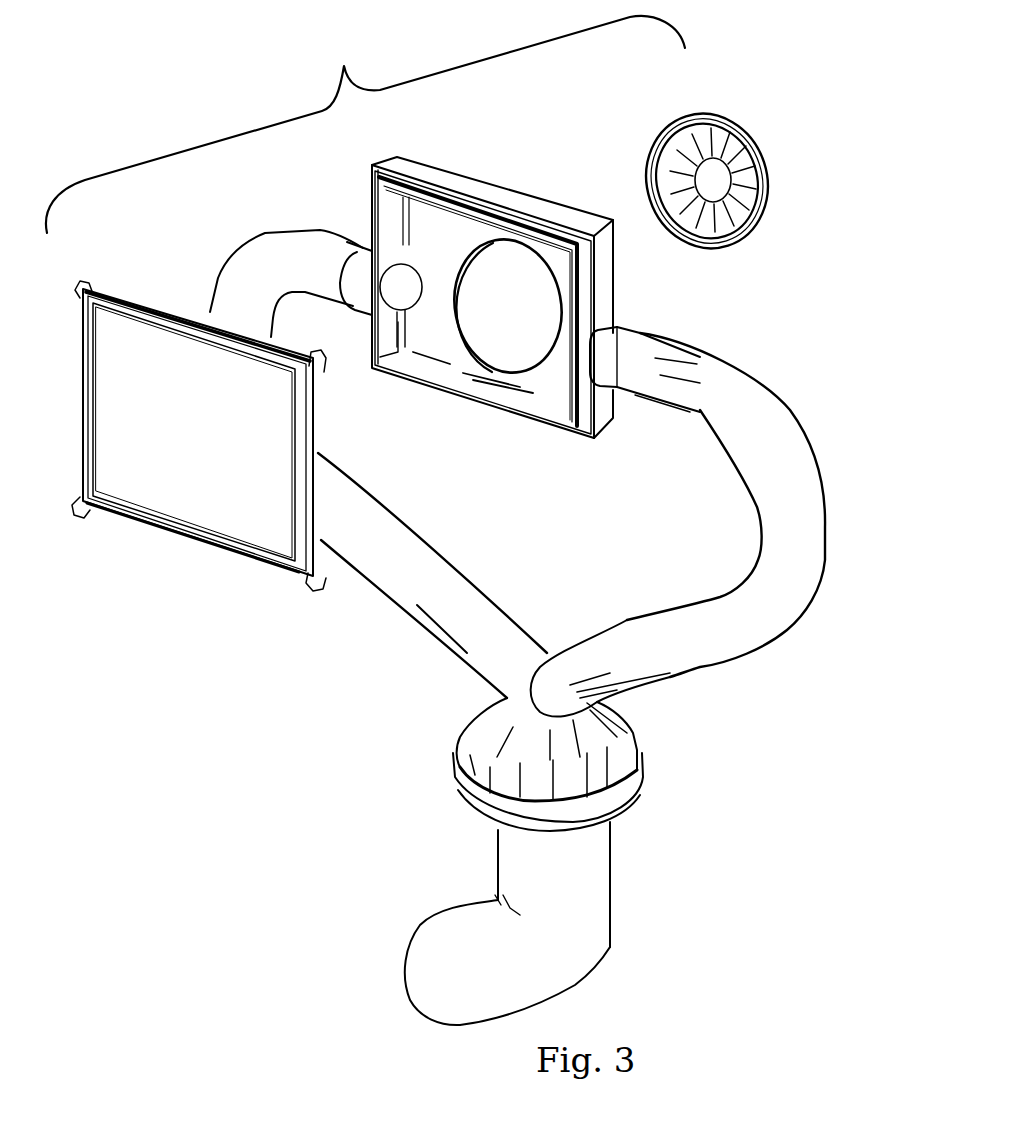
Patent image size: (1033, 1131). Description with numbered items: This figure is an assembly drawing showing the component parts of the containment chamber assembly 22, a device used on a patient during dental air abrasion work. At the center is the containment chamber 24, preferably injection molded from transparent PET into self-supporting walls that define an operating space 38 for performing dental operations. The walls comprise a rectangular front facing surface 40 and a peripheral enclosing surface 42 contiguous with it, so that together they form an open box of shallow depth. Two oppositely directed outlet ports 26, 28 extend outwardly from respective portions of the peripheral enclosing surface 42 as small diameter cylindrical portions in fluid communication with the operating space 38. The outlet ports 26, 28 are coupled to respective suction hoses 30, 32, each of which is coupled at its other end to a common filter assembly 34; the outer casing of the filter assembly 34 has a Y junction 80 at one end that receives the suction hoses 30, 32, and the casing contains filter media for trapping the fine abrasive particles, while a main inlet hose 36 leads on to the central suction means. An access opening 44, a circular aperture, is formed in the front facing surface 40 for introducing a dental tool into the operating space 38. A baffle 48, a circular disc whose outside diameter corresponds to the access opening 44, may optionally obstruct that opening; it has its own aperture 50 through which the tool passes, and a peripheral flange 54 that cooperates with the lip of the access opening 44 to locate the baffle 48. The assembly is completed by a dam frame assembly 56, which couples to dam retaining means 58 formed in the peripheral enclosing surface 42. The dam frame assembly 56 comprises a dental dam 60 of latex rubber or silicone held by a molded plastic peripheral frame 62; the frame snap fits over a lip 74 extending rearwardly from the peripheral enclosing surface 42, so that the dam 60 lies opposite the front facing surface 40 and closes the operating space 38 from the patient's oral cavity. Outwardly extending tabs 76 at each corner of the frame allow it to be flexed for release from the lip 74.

The containment chamber assembly 22 is at (365, 124).
The containment chamber 24 is at (493, 412).
The outlet port 26 is at (619, 388).
The outlet port 28 is at (410, 266).
The suction hose 30 is at (700, 600).
The suction hose 32 is at (292, 231).
The filter assembly 34 is at (633, 733).
The main inlet hose 36 is at (603, 950).
The operating space 38 is at (442, 218).
The front facing surface 40 is at (478, 305).
The peripheral enclosing surface 42 is at (424, 157).
The access opening 44 is at (478, 350).
The baffle 48 is at (653, 143).
The aperture 50 is at (720, 150).
The peripheral flange 54 is at (762, 230).
The dam frame assembly 56 is at (170, 477).
The dam retaining means 58 is at (587, 297).
The dental dam 60 is at (228, 524).
The peripheral frame 62 is at (136, 302).
The lip 74 is at (532, 213).
The tabs 76 is at (77, 278).
The Y junction 80 is at (457, 735).